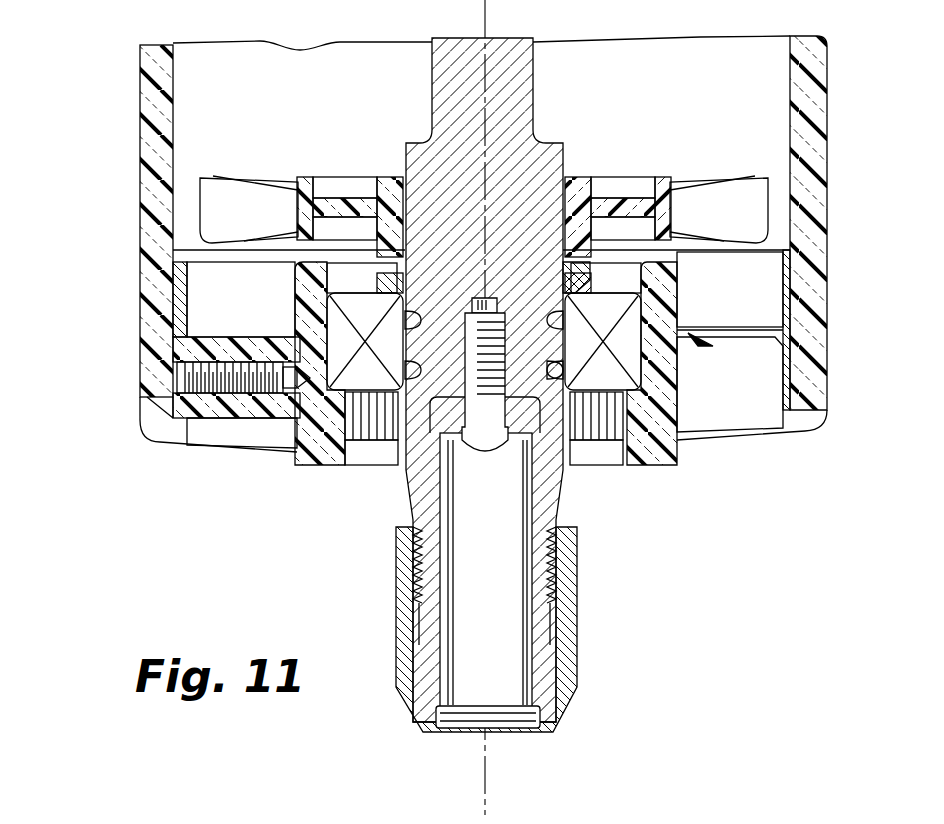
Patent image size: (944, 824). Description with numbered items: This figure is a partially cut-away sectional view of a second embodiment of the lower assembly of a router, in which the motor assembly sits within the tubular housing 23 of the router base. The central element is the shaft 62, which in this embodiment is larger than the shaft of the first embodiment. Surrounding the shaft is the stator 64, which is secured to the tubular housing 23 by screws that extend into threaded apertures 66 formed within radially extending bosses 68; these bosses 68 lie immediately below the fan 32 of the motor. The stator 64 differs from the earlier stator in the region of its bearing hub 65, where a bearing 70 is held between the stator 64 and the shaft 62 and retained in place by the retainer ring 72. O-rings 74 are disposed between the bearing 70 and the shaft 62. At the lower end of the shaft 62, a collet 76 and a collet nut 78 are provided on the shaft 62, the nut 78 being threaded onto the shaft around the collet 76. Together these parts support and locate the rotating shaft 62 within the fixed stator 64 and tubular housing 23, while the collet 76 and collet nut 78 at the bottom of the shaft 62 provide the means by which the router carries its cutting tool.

The tubular housing 23 is at (140, 118).
The fan 32 is at (245, 205).
The shaft 62 is at (547, 160).
The retainer ring 72 is at (572, 268).
The radially extending bosses 68 is at (222, 345).
The threaded apertures 66 is at (205, 360).
The bearing hub 65 is at (284, 440).
The stator 64 is at (305, 462).
The bearing 70 is at (376, 382).
The O-rings 74 is at (565, 375).
The collet nut 78 is at (580, 672).
The collet 76 is at (537, 670).